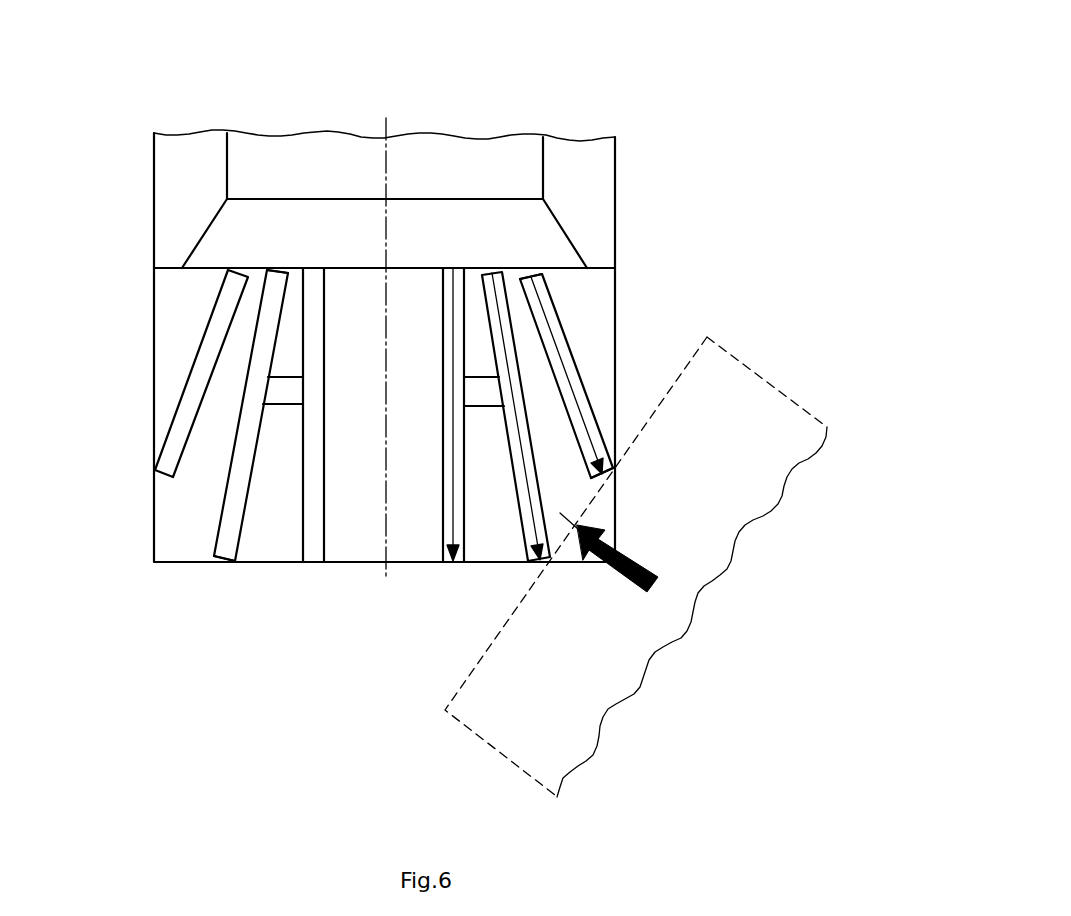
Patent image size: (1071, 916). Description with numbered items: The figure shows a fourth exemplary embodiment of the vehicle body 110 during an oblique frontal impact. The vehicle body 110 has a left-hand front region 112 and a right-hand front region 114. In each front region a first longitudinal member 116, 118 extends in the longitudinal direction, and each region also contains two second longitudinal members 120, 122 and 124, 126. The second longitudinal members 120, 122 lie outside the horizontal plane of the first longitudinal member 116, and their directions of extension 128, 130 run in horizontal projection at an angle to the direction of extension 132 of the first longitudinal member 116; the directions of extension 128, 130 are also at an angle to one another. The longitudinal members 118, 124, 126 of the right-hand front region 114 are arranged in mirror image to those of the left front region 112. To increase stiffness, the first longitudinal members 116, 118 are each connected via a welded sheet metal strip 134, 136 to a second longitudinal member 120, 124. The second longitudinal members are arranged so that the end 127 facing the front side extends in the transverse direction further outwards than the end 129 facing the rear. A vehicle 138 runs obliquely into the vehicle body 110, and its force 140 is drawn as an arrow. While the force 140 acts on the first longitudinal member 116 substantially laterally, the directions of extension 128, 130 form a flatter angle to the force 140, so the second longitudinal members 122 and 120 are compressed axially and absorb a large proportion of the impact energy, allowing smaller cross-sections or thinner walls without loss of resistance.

The vehicle body 110 is at (655, 90).
The left-hand front region 112 is at (642, 271).
The right-hand front region 114 is at (127, 270).
The first longitudinal member 116 is at (442, 530).
The first longitudinal member 118 is at (325, 530).
The second longitudinal member 120 is at (518, 509).
The second longitudinal member 122 is at (577, 364).
The second longitudinal member 124 is at (246, 507).
The second longitudinal member 126 is at (176, 401).
The end facing the front side 127 is at (228, 548).
The direction of extension 128 is at (490, 303).
The end facing the rear 129 is at (278, 282).
The direction of extension 130 is at (557, 342).
The direction of extension 132 is at (453, 310).
The welded sheet metal strip 134 is at (480, 397).
The welded sheet metal strip 136 is at (290, 395).
The vehicle 138 is at (770, 380).
The force 140 is at (645, 567).